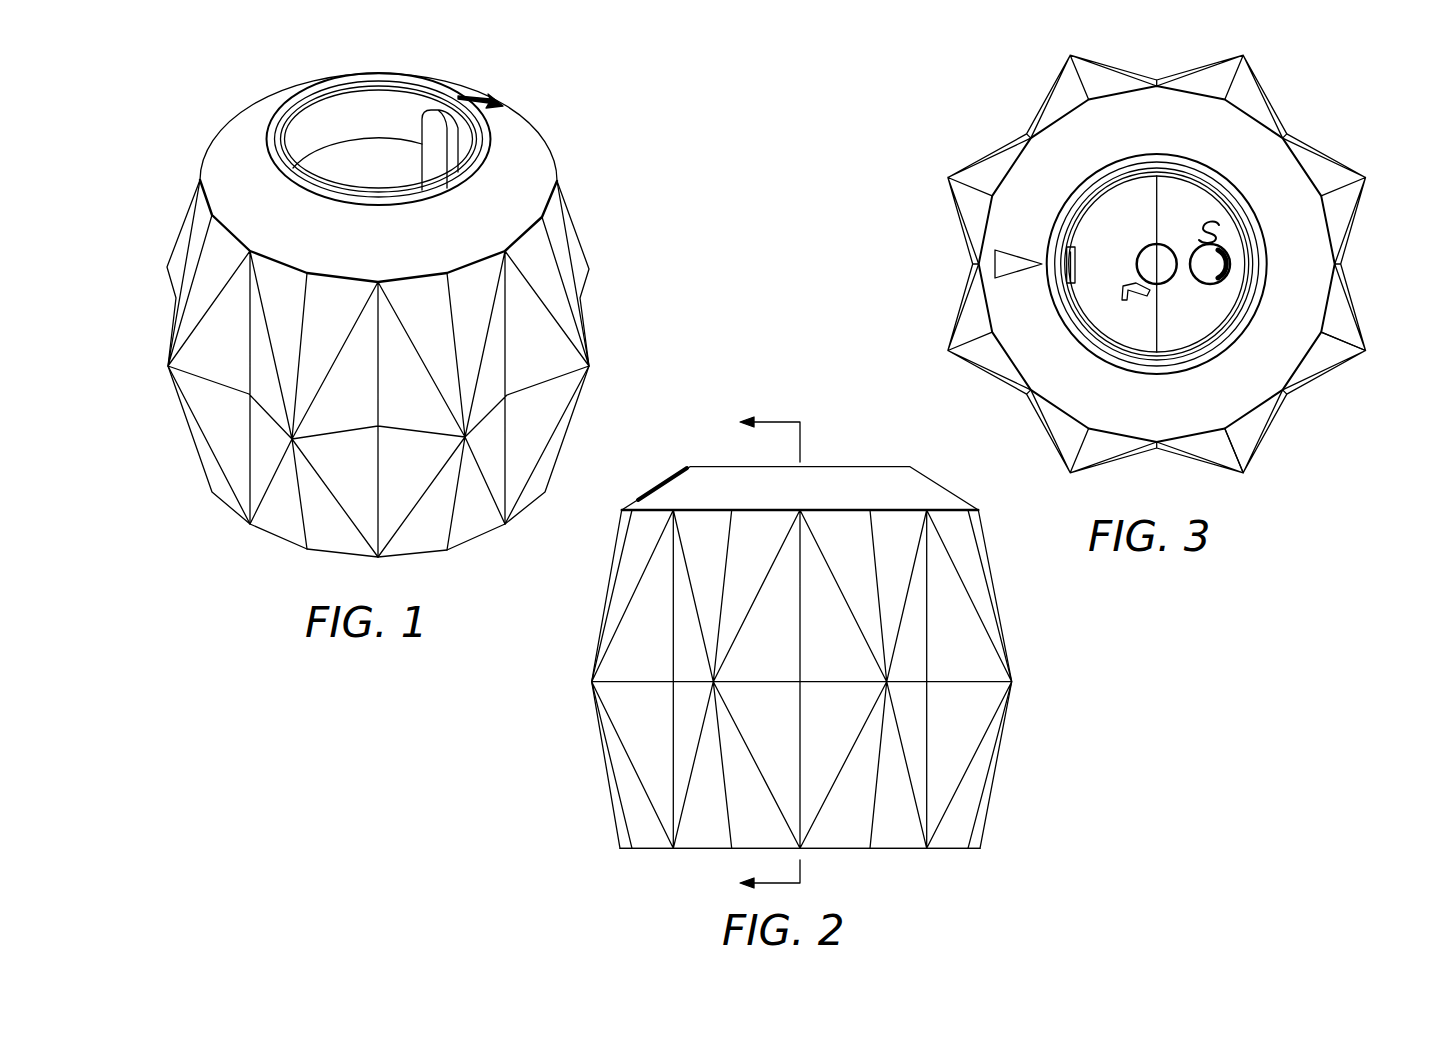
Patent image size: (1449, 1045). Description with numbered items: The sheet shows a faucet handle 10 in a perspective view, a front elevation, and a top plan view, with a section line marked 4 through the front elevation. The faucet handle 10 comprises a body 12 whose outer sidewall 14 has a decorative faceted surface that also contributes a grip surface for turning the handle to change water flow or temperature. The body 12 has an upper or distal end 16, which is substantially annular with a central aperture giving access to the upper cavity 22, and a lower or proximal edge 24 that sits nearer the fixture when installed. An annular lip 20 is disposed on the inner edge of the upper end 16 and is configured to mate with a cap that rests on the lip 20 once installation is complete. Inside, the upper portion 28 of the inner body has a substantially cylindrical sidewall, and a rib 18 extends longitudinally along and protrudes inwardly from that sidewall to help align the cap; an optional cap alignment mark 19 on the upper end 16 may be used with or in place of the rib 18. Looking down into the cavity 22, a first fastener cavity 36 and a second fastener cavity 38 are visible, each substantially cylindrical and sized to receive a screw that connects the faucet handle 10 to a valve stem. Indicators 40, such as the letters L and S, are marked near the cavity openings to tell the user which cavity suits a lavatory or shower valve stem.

In FIG. 2, the section line 4 is at (761, 655).
In FIG. 1, the faucet handle 10 is at (213, 82).
In FIG. 2, the faucet handle 10 is at (685, 446).
In FIG. 3, the faucet handle 10 is at (995, 93).
In FIG. 1, the body 12 is at (182, 446).
In FIG. 1, the outer sidewall 14 is at (575, 253).
In FIG. 2, the outer sidewall 14 is at (608, 745).
In FIG. 3, the outer sidewall 14 is at (1247, 438).
In FIG. 1, the upper end 16 is at (222, 177).
In FIG. 2, the upper end 16 is at (862, 475).
In FIG. 3, the upper end 16 is at (1263, 167).
In FIG. 1, the rib 18 is at (437, 128).
In FIG. 3, the rib 18 is at (1067, 253).
In FIG. 1, the cap alignment mark 19 is at (483, 97).
In FIG. 2, the cap alignment mark 19 is at (663, 483).
In FIG. 3, the cap alignment mark 19 is at (1000, 267).
In FIG. 1, the annular lip 20 is at (408, 85).
In FIG. 3, the annular lip 20 is at (1148, 162).
In FIG. 1, the upper cavity 22 is at (338, 134).
In FIG. 3, the upper cavity 22 is at (1105, 237).
In FIG. 2, the lower edge 24 is at (947, 848).
In FIG. 3, the upper portion of inner body 28 is at (1210, 308).
In FIG. 3, the first fastener cavity 36 is at (1160, 280).
In FIG. 3, the second fastener cavity 38 is at (1222, 267).
In FIG. 3, the indicator 40 is at (1223, 226).